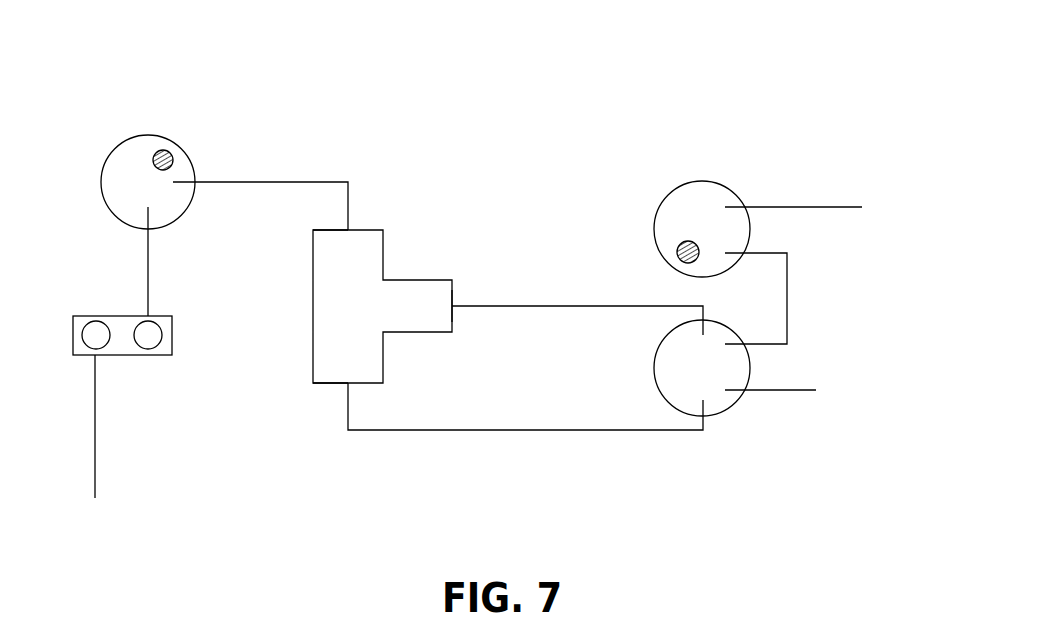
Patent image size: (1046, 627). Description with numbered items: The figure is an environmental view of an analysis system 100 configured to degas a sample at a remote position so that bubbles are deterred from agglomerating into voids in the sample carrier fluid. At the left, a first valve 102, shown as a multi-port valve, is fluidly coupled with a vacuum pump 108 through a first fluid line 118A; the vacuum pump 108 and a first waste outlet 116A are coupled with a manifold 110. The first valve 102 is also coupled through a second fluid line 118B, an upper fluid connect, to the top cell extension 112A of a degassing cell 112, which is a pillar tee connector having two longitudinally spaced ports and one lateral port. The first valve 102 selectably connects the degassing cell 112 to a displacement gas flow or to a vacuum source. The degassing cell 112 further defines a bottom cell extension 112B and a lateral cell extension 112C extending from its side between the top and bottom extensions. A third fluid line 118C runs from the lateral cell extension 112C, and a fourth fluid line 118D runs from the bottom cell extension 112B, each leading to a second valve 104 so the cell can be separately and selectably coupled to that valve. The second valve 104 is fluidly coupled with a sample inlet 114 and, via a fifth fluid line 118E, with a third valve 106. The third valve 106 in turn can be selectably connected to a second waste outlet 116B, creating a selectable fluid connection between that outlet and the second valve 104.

The analysis system 100 is at (150, 58).
The first valve 102 is at (147, 135).
The second valve 104 is at (722, 417).
The third valve 106 is at (702, 181).
The vacuum pump 108 is at (157, 337).
The manifold 110 is at (116, 314).
The degassing cell 112 is at (386, 255).
The top cell extension 112A is at (327, 237).
The bottom cell extension 112B is at (331, 376).
The lateral cell extension 112C is at (418, 324).
The sample inlet 114 is at (770, 393).
The first waste outlet 116A is at (97, 460).
The second waste outlet 116B is at (792, 206).
The first fluid line 118A is at (152, 263).
The second fluid line 118B is at (332, 180).
The third fluid line 118C is at (525, 303).
The fourth fluid line 118D is at (525, 431).
The fifth fluid line 118E is at (788, 298).